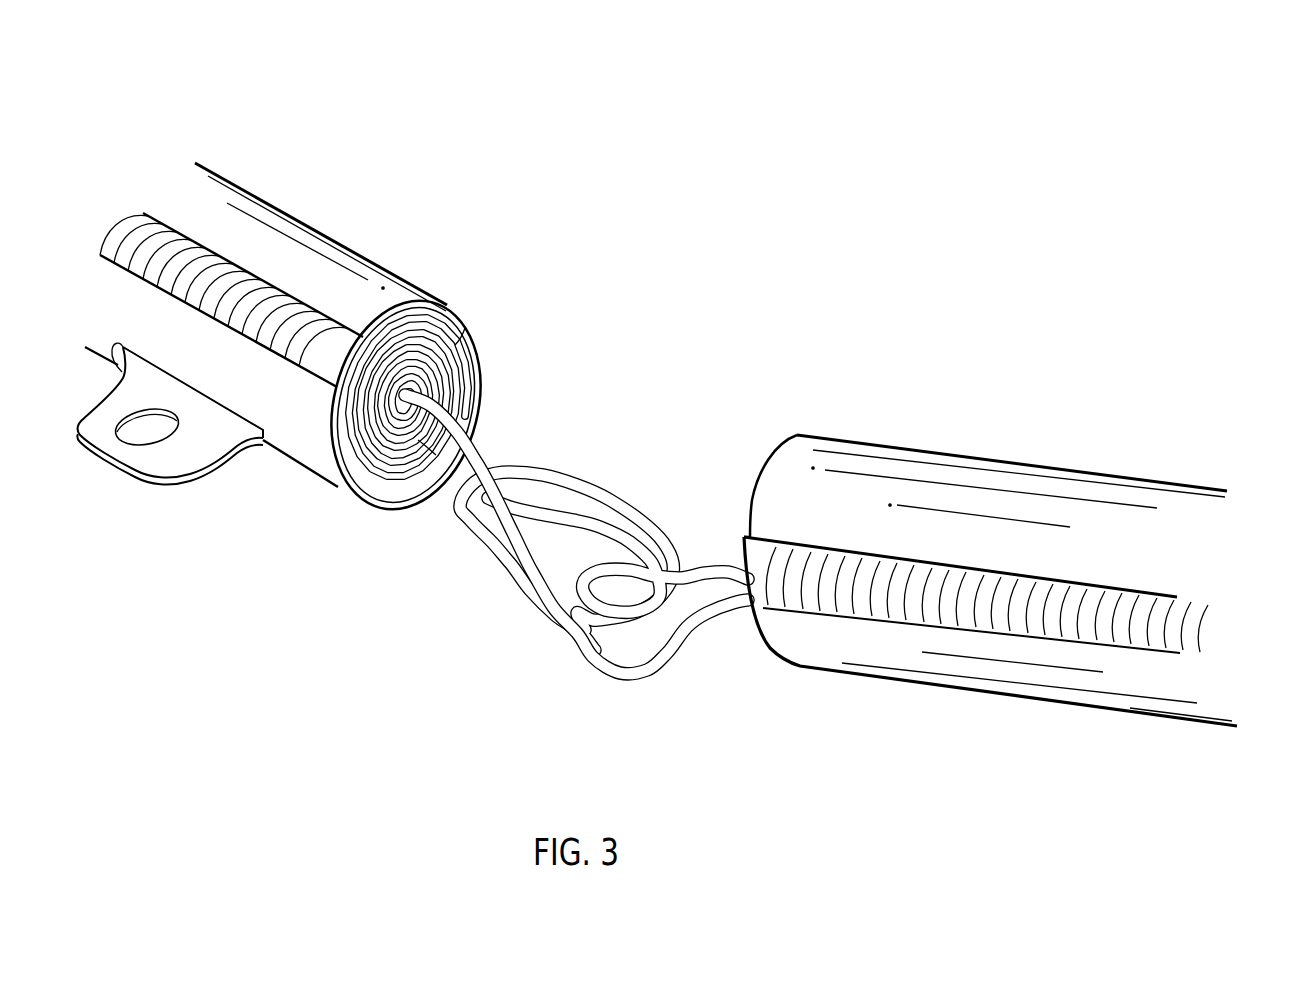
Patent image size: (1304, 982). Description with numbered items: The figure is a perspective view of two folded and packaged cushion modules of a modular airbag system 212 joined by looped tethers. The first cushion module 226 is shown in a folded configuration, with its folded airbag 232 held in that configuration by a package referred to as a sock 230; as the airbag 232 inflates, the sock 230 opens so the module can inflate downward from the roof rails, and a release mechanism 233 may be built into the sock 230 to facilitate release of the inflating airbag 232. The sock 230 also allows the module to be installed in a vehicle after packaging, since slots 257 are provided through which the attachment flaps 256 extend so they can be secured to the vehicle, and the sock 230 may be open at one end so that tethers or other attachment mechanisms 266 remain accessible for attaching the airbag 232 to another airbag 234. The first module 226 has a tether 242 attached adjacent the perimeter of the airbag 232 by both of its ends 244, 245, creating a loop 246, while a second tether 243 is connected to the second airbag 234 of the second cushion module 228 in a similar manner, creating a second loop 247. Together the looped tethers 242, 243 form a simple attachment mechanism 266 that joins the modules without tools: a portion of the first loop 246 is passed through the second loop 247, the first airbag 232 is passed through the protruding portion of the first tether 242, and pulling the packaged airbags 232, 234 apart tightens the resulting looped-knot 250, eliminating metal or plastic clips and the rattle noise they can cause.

The modular airbag system 212 is at (811, 243).
The first cushion module 226 is at (373, 237).
The second cushion module 228 is at (1109, 449).
The sock 230 is at (225, 202).
The folded airbag 232 is at (378, 477).
The release mechanism 233 is at (893, 617).
The second airbag 234 is at (786, 455).
The tether 242 is at (519, 470).
The second tether 243 is at (617, 668).
The first tether end 244 is at (461, 350).
The second tether end 245 is at (424, 438).
The first loop 246 is at (593, 517).
The second loop 247 is at (698, 600).
The looped-knot 250 is at (525, 643).
The attachment flaps 256 is at (157, 463).
The slots 257 is at (112, 357).
The attachment mechanism 266 is at (600, 445).